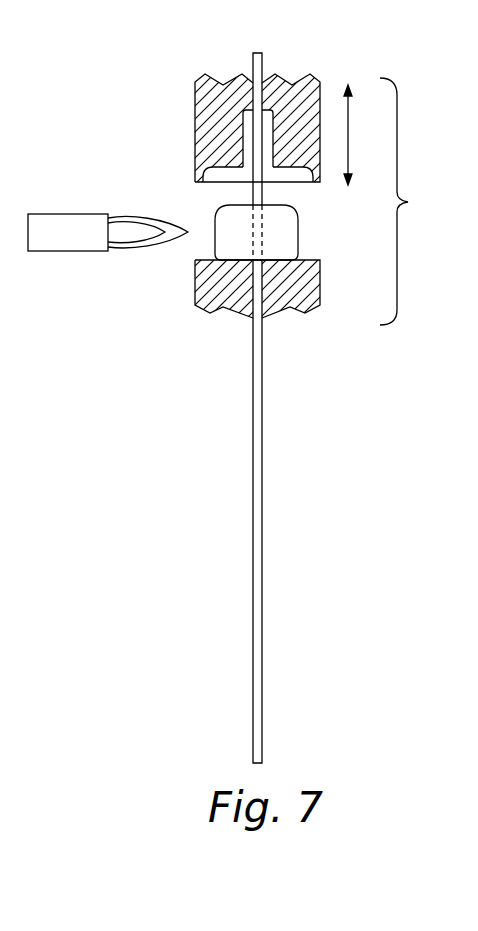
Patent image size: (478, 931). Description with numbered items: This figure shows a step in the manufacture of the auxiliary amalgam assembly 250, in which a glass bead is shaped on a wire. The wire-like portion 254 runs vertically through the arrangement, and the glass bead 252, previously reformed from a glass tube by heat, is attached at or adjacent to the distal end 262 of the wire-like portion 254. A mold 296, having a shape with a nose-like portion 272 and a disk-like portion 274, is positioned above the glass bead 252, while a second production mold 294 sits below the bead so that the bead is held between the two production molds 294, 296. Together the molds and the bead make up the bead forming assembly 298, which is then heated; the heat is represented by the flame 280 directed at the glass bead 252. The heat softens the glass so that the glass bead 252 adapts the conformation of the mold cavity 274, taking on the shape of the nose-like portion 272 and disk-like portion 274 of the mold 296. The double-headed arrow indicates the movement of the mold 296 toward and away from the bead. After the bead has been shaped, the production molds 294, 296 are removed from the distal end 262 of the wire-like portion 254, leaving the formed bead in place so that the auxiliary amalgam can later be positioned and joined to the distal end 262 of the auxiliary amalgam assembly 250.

The auxiliary amalgam assembly 250 is at (82, 151).
The glass bead 252 is at (283, 238).
The wire-like portion 254 is at (262, 474).
The distal end 262 is at (257, 195).
The nose-like portion 272 is at (243, 136).
The disk-like portion 274 is at (295, 175).
The flame 280 is at (105, 263).
The production mold 294 is at (203, 285).
The mold 296 is at (294, 96).
The bead forming assembly 298 is at (395, 201).